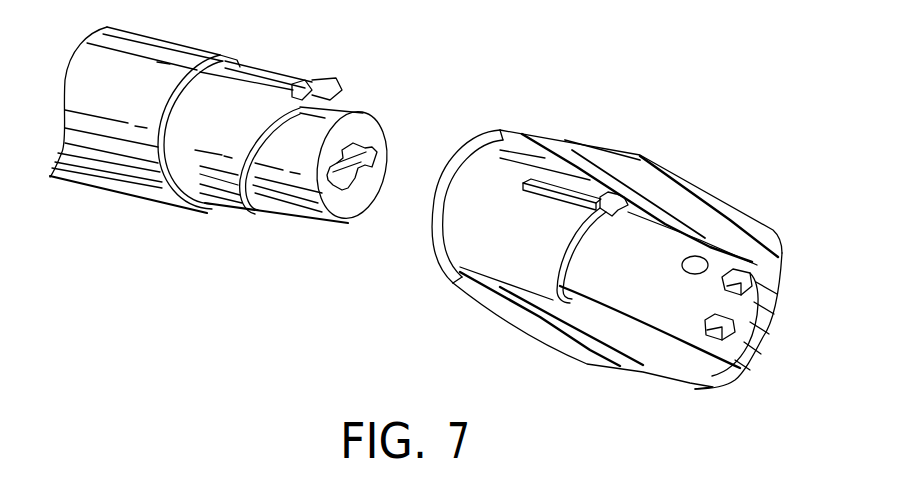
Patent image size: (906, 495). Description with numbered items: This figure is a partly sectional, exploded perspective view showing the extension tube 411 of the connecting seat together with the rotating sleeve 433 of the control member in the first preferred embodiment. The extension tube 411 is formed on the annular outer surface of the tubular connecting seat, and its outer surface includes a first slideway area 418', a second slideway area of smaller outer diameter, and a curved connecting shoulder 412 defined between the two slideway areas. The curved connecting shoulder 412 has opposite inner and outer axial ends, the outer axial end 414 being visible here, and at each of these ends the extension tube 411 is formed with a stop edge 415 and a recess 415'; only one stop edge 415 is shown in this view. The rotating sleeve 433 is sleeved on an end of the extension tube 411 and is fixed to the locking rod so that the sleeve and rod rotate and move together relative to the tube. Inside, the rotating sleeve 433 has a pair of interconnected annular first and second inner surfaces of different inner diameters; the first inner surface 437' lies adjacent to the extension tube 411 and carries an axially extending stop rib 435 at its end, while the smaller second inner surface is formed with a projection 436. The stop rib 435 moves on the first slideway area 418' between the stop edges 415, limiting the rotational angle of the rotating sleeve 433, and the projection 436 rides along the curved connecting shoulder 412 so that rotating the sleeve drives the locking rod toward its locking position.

The extension tube 411 is at (137, 173).
The curved connecting shoulder 412 is at (243, 180).
The outer axial end 414 is at (292, 107).
The stop edge 415 is at (266, 46).
The recess 415' is at (354, 76).
The first slideway area 418' is at (257, 188).
The rotating sleeve 433 is at (735, 208).
The stop rib 435 is at (550, 193).
The projection 436 is at (617, 197).
The first inner surface 437' is at (465, 237).